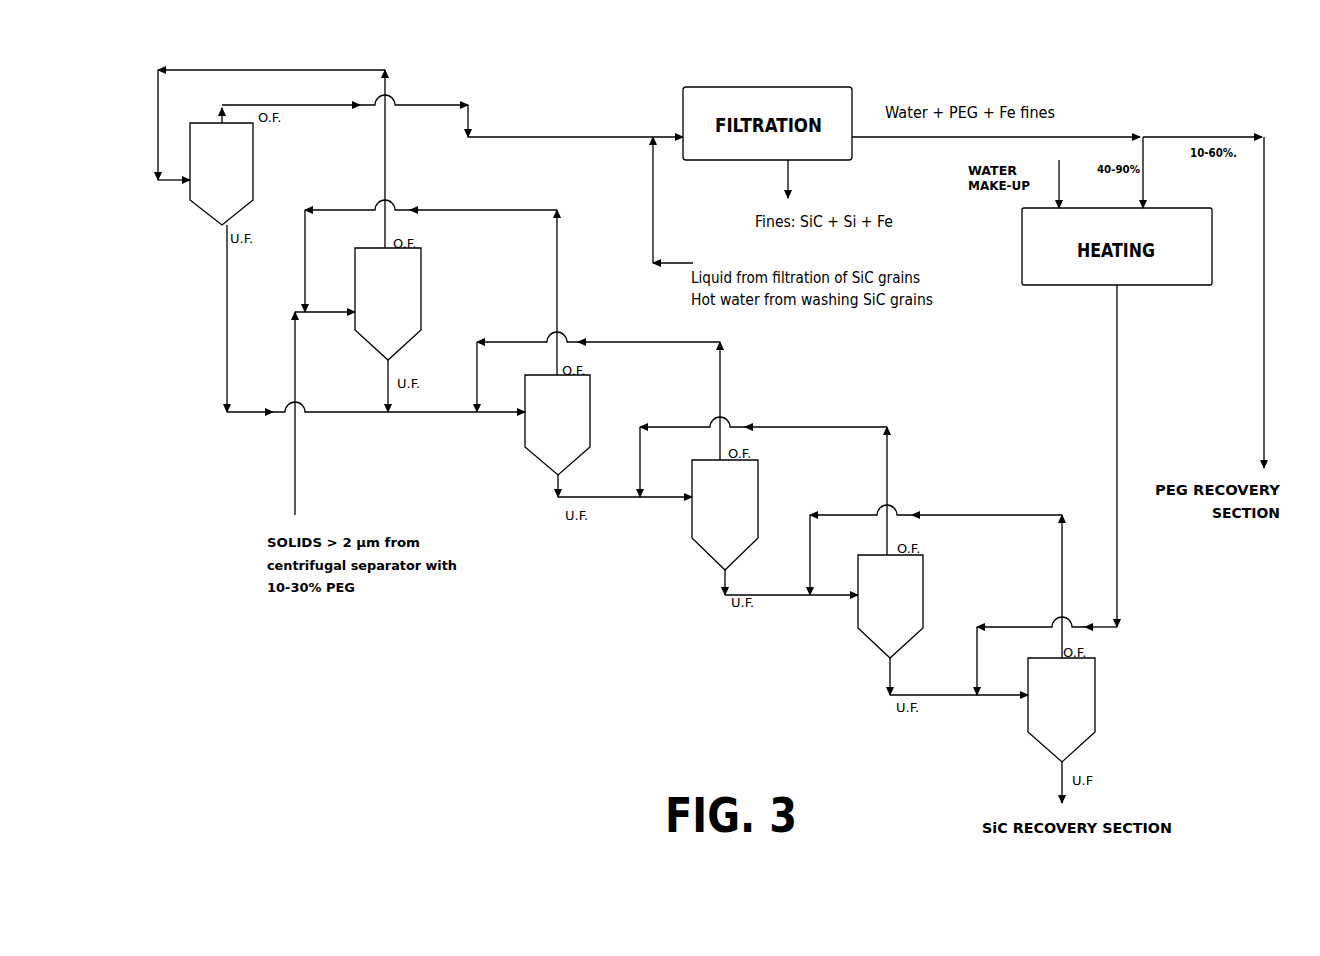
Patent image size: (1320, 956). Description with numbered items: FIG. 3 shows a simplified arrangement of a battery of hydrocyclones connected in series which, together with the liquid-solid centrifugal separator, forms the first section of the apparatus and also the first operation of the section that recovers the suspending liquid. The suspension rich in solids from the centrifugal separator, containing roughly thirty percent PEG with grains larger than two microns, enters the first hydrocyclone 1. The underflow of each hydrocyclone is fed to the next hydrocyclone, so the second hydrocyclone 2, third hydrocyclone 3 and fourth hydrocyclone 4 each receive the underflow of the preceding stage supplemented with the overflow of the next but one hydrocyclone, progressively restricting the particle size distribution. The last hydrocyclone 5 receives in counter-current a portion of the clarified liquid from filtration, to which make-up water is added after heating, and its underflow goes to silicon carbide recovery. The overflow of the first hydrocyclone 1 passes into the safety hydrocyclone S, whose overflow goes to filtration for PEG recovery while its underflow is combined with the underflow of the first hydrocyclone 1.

The safety hydrocyclone S is at (221, 174).
The first hydrocyclone 1 is at (388, 304).
The second hydrocyclone 2 is at (557, 425).
The third hydrocyclone 3 is at (725, 515).
The fourth hydrocyclone 4 is at (890, 606).
The last hydrocyclone 5 is at (1061, 710).